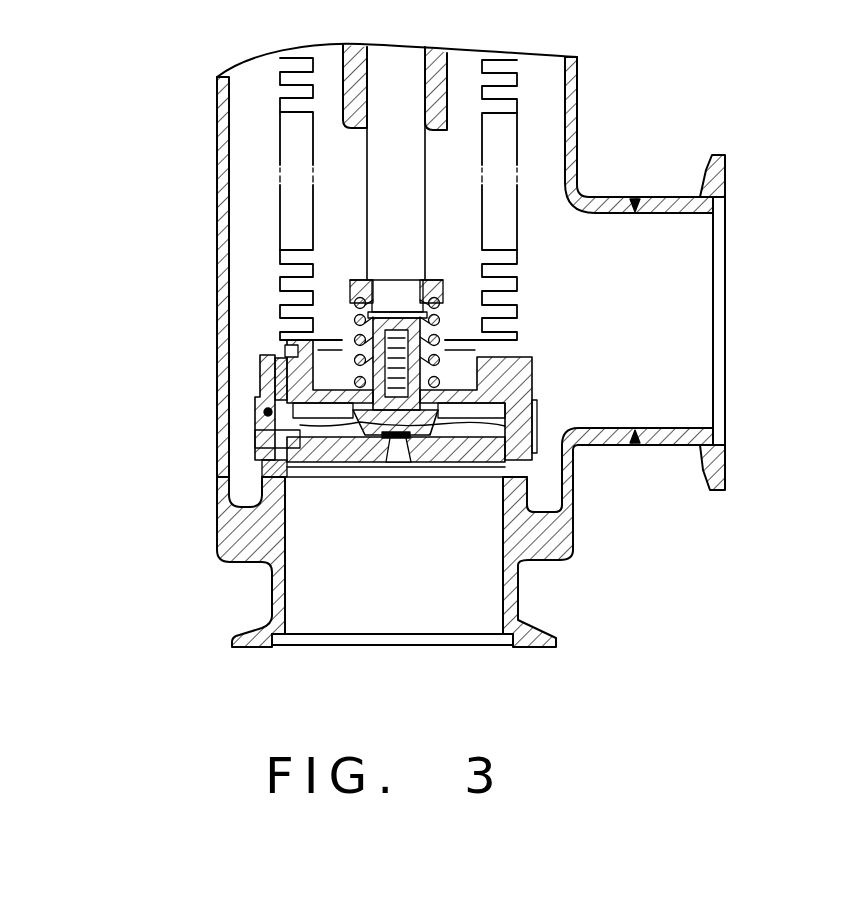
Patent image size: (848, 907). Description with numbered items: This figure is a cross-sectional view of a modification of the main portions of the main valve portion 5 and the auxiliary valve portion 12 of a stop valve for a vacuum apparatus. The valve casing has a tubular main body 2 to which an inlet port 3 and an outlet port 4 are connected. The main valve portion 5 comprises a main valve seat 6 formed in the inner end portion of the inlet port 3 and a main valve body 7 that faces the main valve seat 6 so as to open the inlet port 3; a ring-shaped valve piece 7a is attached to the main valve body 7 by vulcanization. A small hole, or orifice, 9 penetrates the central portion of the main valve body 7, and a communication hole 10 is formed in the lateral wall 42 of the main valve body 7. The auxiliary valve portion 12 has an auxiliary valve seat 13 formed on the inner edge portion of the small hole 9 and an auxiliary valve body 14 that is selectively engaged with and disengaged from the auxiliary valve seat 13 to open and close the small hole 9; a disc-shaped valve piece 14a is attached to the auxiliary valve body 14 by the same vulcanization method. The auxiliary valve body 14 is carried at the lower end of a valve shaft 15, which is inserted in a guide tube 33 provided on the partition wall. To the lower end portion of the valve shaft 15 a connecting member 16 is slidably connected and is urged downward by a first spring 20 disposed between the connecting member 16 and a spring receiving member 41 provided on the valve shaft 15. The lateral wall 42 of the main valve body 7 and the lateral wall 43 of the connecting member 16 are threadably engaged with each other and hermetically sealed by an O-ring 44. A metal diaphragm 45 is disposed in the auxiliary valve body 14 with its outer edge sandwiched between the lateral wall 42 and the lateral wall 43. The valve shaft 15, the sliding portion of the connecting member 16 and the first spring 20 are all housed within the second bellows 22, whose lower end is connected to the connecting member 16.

The tubular main body 2 is at (218, 156).
The inlet port 3 is at (372, 618).
The outlet port 4 is at (698, 255).
The main valve portion 5 is at (477, 470).
The main valve seat 6 is at (283, 467).
The main valve body 7 is at (312, 462).
The ring-shaped valve piece 7a is at (522, 490).
The small hole (orifice) 9 is at (395, 458).
The communication hole 10 is at (263, 437).
The auxiliary valve portion 12 is at (343, 428).
The auxiliary valve seat 13 is at (410, 443).
The auxiliary valve body 14 is at (380, 440).
The disc-shaped valve piece 14a is at (382, 456).
The valve shaft 15 is at (413, 175).
The connecting member 16 is at (283, 350).
The first spring 20 is at (440, 322).
The second bellows 22 is at (285, 258).
The guide tube 33 is at (353, 55).
The spring receiving member 41 is at (426, 281).
The lateral wall of main valve body 42 is at (265, 368).
The lateral wall of connecting member 43 is at (283, 390).
The O-ring 44 is at (268, 412).
The metal diaphragm 45 is at (537, 440).